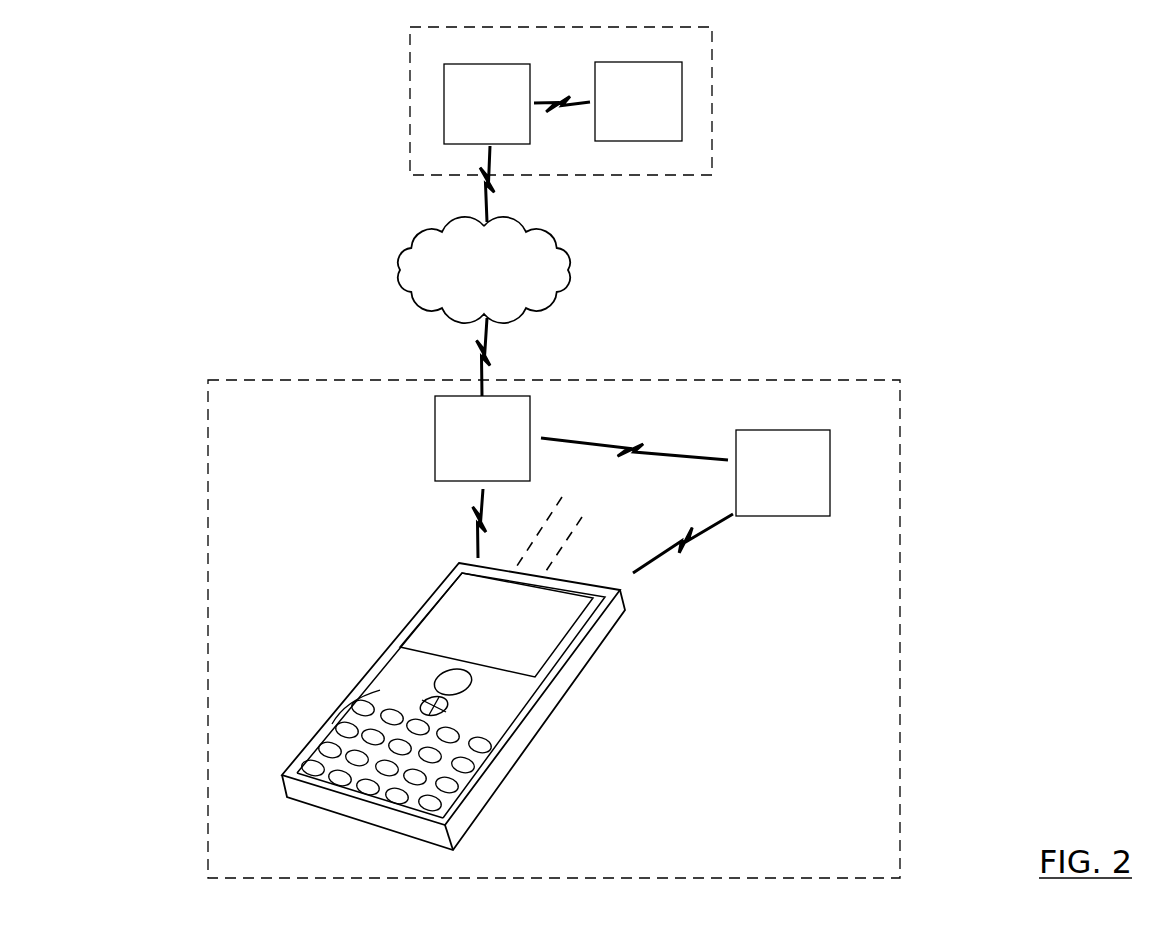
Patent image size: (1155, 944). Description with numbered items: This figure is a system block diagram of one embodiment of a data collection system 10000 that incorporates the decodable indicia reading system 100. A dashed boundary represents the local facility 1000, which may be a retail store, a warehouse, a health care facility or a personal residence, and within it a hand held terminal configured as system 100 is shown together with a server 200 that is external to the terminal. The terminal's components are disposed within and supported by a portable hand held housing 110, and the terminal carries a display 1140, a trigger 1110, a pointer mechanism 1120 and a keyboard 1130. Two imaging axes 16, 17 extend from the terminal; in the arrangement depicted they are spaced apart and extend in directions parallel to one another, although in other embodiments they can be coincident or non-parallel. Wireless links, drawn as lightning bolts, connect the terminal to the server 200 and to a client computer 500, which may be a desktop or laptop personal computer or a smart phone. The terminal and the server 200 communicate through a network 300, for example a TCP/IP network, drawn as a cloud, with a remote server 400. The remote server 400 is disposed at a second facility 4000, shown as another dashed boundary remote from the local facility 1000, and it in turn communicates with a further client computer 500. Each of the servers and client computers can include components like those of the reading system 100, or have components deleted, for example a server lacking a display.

The data collection system 10000 is at (814, 70).
The facility 4000 is at (709, 170).
The remote server 400 is at (487, 104).
The client computer 500 is at (712, 289).
The network 300 is at (484, 270).
The local facility 1000 is at (881, 861).
The server 200 is at (482, 438).
The decodable indicia reading system 100 is at (475, 673).
The portable hand held housing 110 is at (520, 733).
The display 1140 is at (442, 620).
The trigger 1110 is at (440, 673).
The pointer mechanism 1120 is at (425, 702).
The keyboard 1130 is at (332, 723).
The imaging axis 17 is at (530, 543).
The imaging axis 16 is at (562, 553).